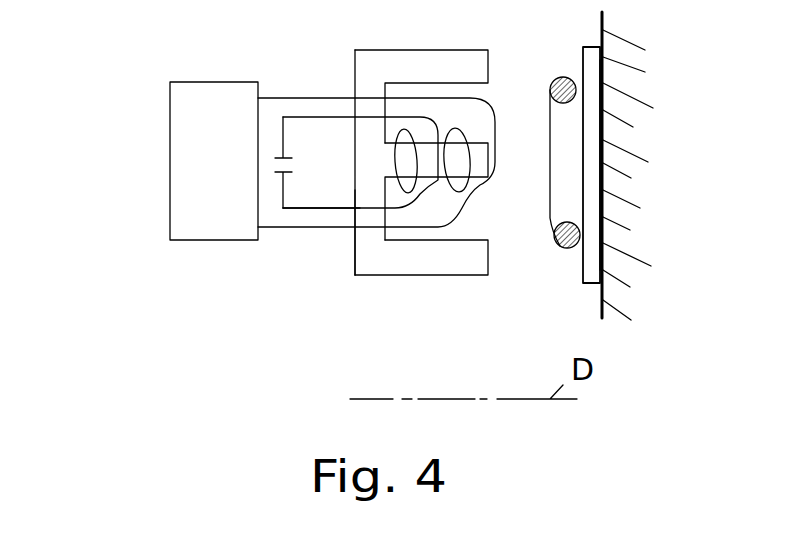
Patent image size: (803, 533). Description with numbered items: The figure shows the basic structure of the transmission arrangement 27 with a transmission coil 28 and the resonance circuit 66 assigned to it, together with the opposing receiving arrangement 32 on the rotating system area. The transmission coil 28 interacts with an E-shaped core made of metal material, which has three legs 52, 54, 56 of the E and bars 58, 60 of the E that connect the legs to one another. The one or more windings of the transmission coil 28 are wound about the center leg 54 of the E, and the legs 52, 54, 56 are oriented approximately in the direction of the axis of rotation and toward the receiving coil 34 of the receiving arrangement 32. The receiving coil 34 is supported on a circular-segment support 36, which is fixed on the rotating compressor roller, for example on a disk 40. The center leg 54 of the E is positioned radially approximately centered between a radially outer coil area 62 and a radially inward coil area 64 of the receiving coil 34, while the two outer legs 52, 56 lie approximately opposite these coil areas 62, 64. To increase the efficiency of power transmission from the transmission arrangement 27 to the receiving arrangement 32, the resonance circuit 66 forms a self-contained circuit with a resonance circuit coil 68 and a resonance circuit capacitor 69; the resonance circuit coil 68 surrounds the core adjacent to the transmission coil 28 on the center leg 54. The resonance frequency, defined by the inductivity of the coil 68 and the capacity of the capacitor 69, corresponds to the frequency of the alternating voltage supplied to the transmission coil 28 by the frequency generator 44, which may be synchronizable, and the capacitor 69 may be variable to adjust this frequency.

The transmission arrangement 27 is at (213, 340).
The transmission coil 28 is at (477, 185).
The receiving arrangement 32 is at (682, 344).
The receiving coil 34 is at (572, 158).
The support 36 is at (592, 227).
The disk 40 is at (640, 93).
The frequency generator 44 is at (170, 136).
The leg of the E 52 is at (392, 47).
The center leg of the E 54 is at (472, 143).
The leg of the E 56 is at (442, 278).
The bar of the E 58 is at (368, 108).
The bar of the E 60 is at (371, 234).
The radially outer coil area 62 is at (577, 77).
The radially inward coil area 64 is at (571, 250).
The resonance circuit 66 is at (324, 208).
The resonance circuit coil 68 is at (417, 195).
The resonance circuit capacitor 69 is at (280, 177).